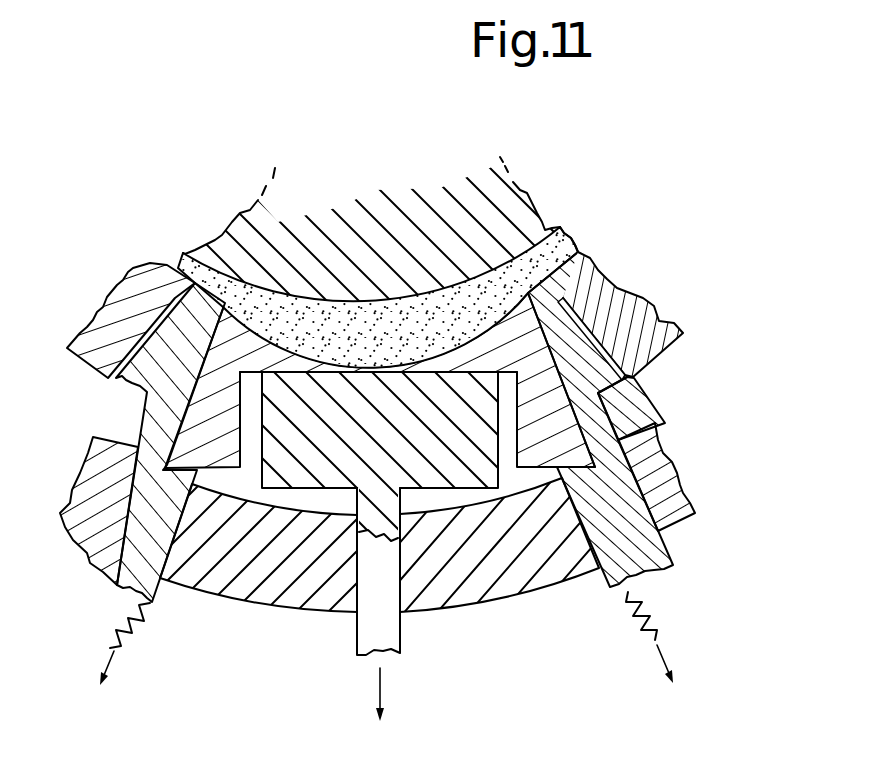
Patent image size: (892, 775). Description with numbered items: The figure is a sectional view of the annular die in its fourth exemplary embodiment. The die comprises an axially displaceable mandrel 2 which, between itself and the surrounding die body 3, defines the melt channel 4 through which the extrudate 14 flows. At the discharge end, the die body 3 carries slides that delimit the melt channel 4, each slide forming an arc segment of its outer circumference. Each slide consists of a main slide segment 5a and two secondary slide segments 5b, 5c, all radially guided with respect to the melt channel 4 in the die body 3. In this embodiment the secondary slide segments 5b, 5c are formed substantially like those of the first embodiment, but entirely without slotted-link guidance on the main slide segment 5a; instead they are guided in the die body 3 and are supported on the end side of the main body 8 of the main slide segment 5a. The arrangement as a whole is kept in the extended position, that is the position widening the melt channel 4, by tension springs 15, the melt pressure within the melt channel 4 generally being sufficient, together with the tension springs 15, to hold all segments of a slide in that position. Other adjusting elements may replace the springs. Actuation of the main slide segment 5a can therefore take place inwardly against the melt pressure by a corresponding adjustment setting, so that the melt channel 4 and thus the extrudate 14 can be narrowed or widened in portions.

The mandrel 2 is at (352, 241).
The extrudate 14 is at (560, 228).
The melt channel 4 is at (575, 246).
The die body 3 is at (491, 572).
The main body 8 is at (330, 449).
The main slide segment 5a is at (360, 658).
The secondary slide segment 5b is at (210, 398).
The secondary slide segment 5c is at (630, 275).
The tension springs 15 is at (120, 652).